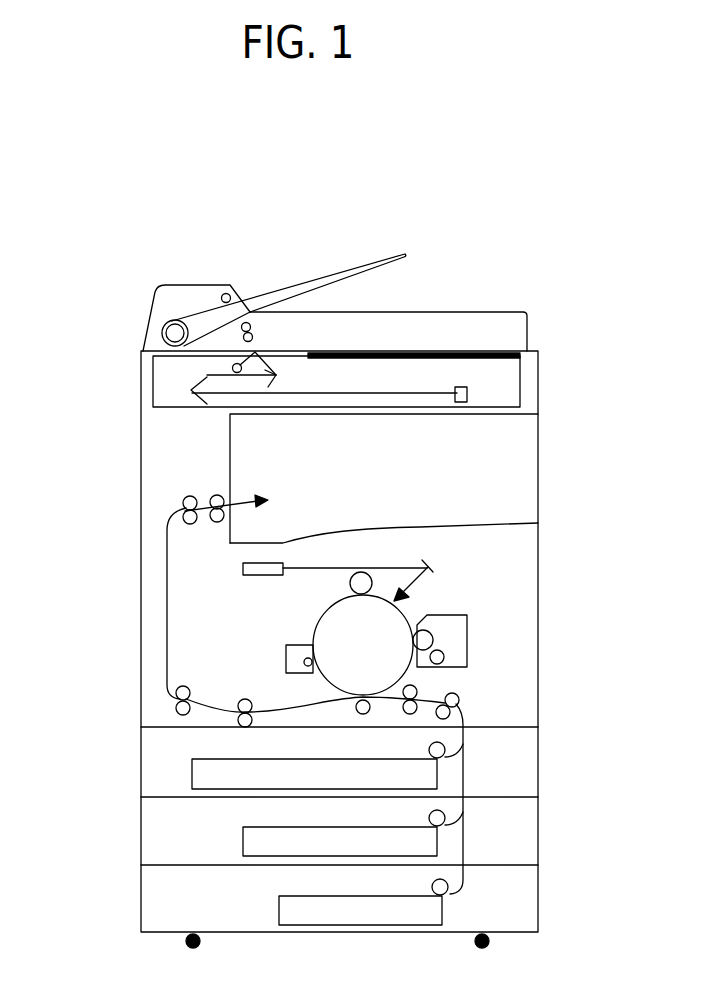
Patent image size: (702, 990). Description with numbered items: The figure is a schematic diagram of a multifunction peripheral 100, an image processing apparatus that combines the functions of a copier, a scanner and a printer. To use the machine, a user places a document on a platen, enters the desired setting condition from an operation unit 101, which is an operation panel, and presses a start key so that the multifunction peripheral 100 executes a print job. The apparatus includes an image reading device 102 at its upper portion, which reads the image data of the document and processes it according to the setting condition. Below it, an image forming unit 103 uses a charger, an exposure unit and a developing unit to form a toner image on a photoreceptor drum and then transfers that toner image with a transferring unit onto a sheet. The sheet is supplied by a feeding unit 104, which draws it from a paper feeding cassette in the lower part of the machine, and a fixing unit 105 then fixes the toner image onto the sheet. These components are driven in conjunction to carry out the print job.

The multifunction peripheral 100 is at (338, 246).
The operation unit 101 is at (493, 353).
The image reading device 102 is at (132, 410).
The image forming unit 103 is at (470, 715).
The feeding unit 104 is at (470, 920).
The fixing unit 105 is at (230, 676).